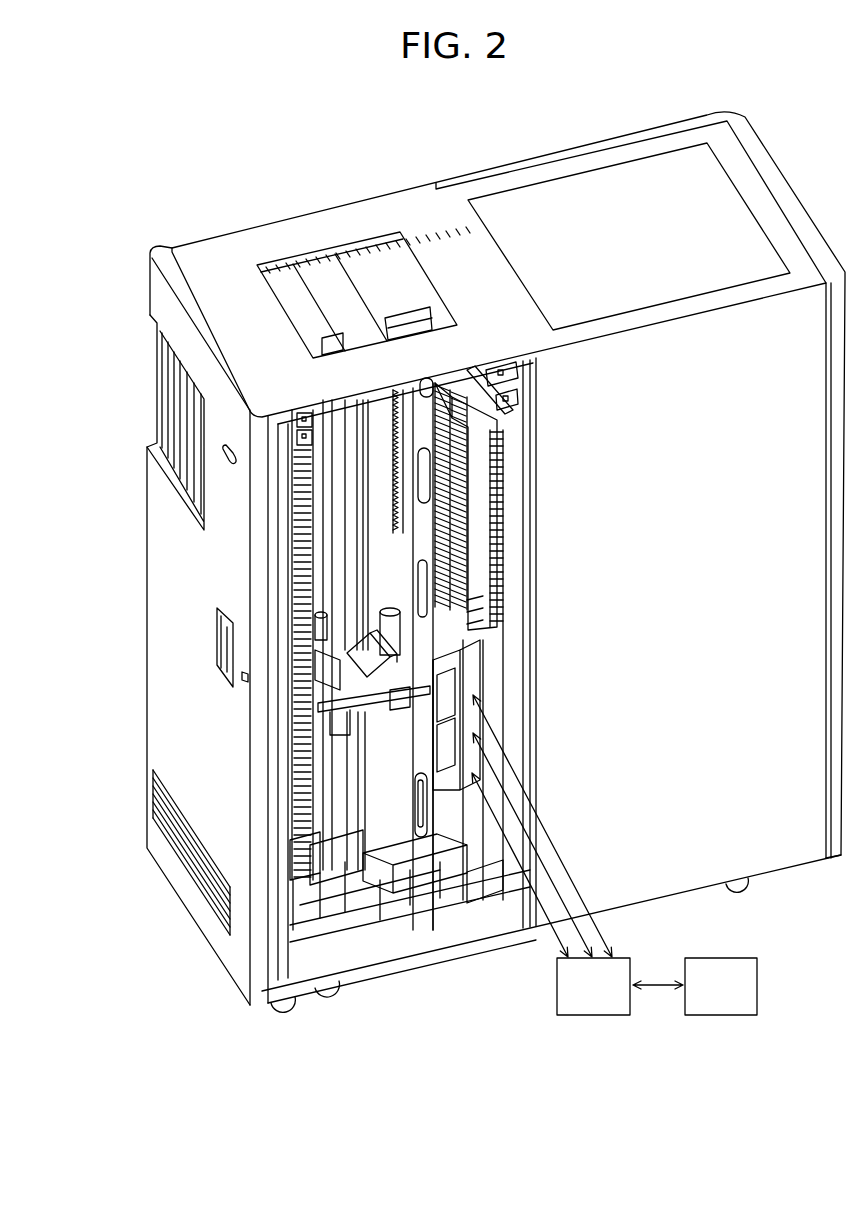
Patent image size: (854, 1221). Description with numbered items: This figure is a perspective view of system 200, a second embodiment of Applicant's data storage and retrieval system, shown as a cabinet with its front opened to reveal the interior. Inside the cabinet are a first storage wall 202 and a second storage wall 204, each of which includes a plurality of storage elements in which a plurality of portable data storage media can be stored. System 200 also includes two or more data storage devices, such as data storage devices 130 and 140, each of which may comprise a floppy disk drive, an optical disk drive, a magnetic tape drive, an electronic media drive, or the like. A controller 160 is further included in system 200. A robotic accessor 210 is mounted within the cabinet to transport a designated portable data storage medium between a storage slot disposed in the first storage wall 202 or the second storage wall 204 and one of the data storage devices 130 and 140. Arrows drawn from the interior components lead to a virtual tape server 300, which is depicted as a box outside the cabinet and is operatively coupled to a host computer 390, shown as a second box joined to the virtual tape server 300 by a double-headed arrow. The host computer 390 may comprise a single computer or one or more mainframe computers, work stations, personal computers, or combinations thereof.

The system 200 is at (317, 1006).
The first storage wall 202 is at (480, 463).
The second storage wall 204 is at (290, 540).
The robotic accessor 210 is at (292, 665).
The data storage device 130 is at (447, 721).
The data storage device 140 is at (457, 762).
The controller 160 is at (477, 677).
The virtual tape server 300 is at (575, 999).
The host computer 390 is at (703, 999).